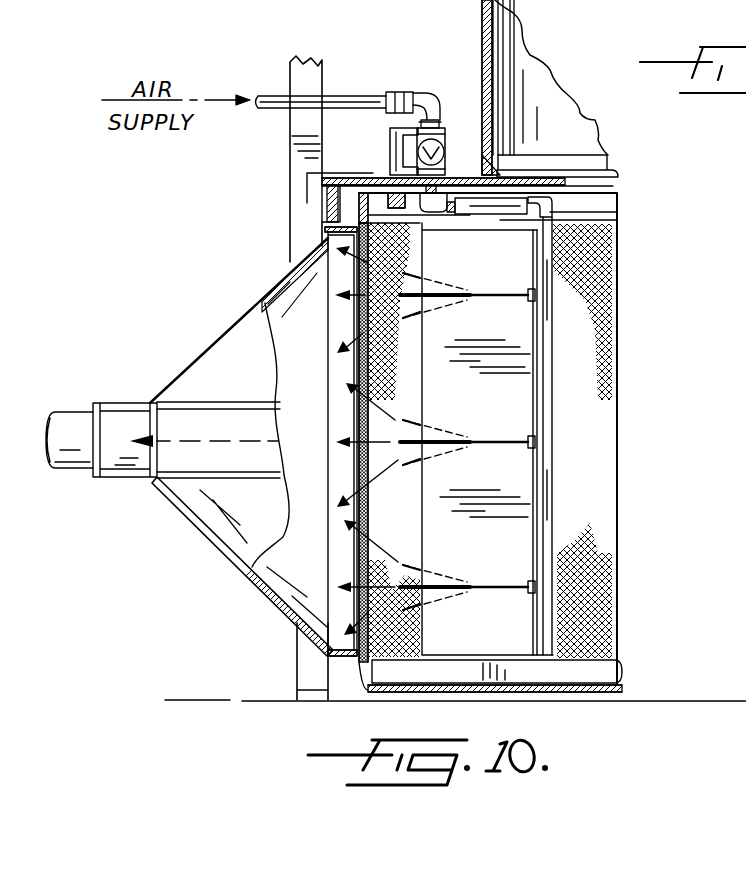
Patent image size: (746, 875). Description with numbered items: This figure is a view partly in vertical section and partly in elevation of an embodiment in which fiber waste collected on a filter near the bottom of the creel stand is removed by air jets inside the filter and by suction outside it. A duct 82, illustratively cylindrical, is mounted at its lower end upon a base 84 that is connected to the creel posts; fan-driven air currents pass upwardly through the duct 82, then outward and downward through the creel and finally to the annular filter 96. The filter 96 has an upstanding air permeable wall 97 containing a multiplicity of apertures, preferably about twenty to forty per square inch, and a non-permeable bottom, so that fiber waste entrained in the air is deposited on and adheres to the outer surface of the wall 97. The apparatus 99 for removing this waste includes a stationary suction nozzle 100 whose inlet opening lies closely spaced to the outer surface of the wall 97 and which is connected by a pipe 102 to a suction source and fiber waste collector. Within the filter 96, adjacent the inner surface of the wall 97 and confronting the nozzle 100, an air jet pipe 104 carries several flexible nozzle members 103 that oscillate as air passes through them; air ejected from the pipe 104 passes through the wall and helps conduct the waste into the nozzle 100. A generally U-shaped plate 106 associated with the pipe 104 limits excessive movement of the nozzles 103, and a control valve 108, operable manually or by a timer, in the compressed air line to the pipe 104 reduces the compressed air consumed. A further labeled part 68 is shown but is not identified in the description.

The clamp bracket 68 is at (323, 200).
The duct 82 is at (513, 37).
The base 84 is at (389, 176).
The annular filter 96 is at (617, 268).
The air permeable wall 97 is at (360, 566).
The apparatus for removing fiber waste 99 is at (284, 262).
The stationary suction nozzle 100 is at (220, 362).
The pipe 102 is at (77, 470).
The flexible nozzle members 103 is at (507, 260).
The air jet pipe 104 is at (555, 480).
The U-shaped plate 106 is at (528, 527).
The control valve 108 is at (453, 137).